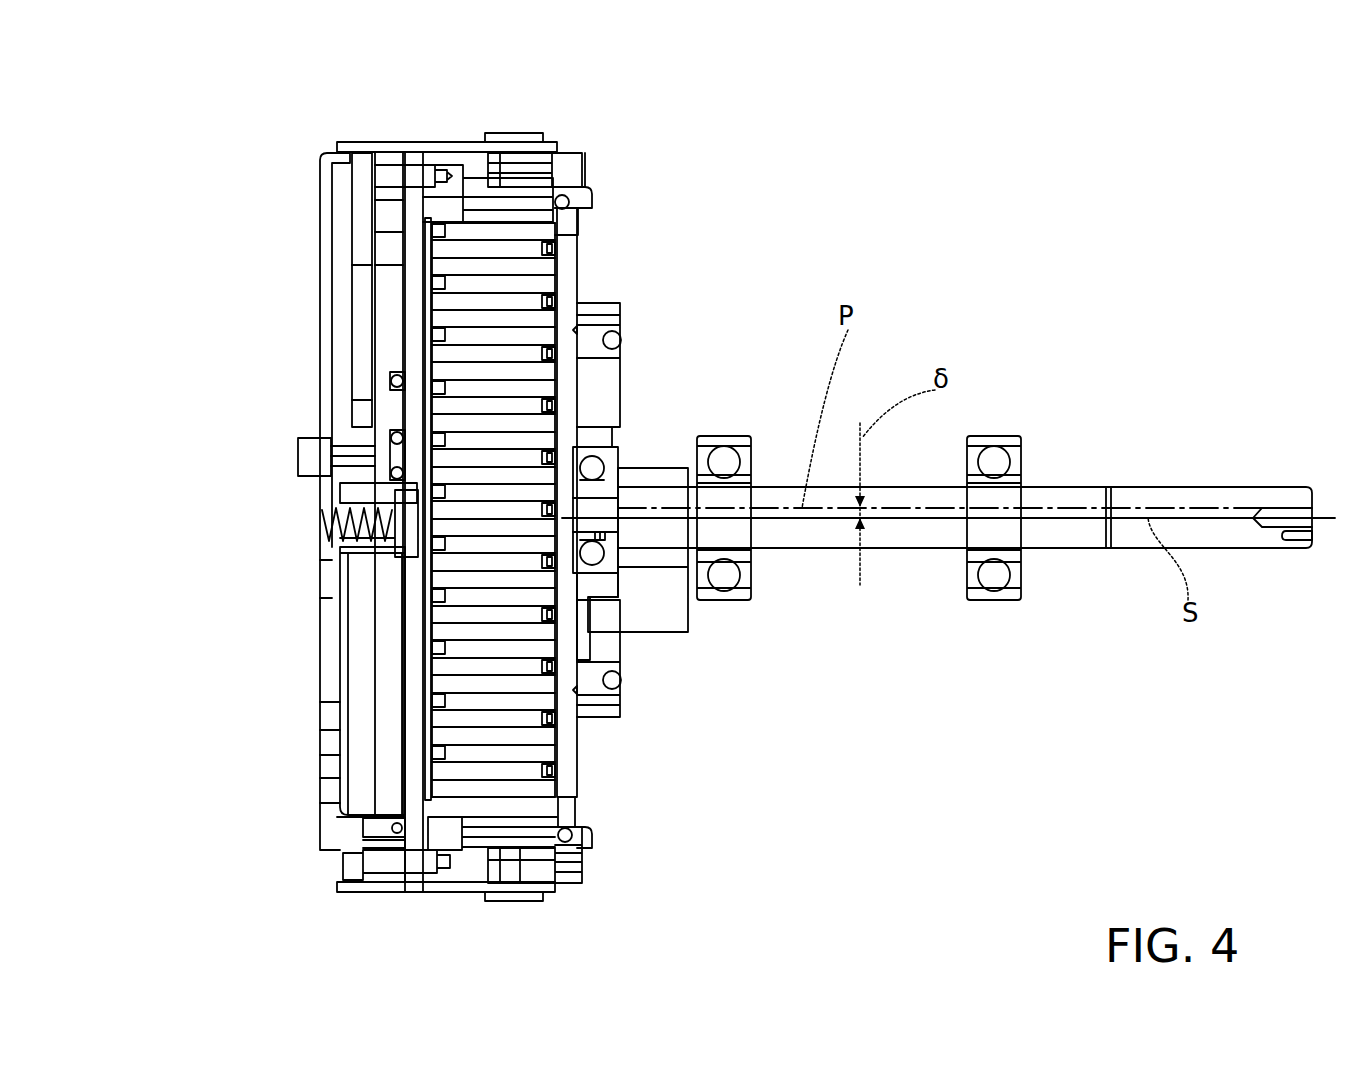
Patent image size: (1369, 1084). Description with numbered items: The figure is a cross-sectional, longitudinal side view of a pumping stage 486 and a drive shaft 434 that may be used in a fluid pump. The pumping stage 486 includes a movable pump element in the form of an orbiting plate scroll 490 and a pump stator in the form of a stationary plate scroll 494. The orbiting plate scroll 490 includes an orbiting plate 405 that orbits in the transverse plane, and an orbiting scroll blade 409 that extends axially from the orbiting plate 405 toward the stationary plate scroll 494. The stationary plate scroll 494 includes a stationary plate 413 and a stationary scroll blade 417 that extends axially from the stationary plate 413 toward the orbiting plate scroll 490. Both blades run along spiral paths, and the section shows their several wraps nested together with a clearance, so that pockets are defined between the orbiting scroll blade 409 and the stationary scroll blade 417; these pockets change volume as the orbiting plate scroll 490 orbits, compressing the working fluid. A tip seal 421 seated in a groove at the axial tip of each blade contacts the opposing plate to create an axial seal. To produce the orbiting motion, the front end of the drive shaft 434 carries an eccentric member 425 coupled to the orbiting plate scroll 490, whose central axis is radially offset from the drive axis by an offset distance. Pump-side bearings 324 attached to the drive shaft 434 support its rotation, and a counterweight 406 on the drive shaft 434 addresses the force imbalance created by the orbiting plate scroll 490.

The pumping stage 486 is at (157, 183).
The stationary plate 413 is at (400, 213).
The stationary scroll blade 417 is at (487, 237).
The orbiting scroll blade 409 is at (528, 223).
The orbiting plate 405 is at (578, 248).
The eccentric member 425 is at (603, 500).
The pump-side bearings 324 is at (612, 583).
The counterweight 406 is at (667, 632).
The drive shaft 434 is at (1227, 490).
The tip seal 421 is at (437, 758).
The stationary plate scroll 494 is at (385, 698).
The orbiting plate scroll 490 is at (607, 779).